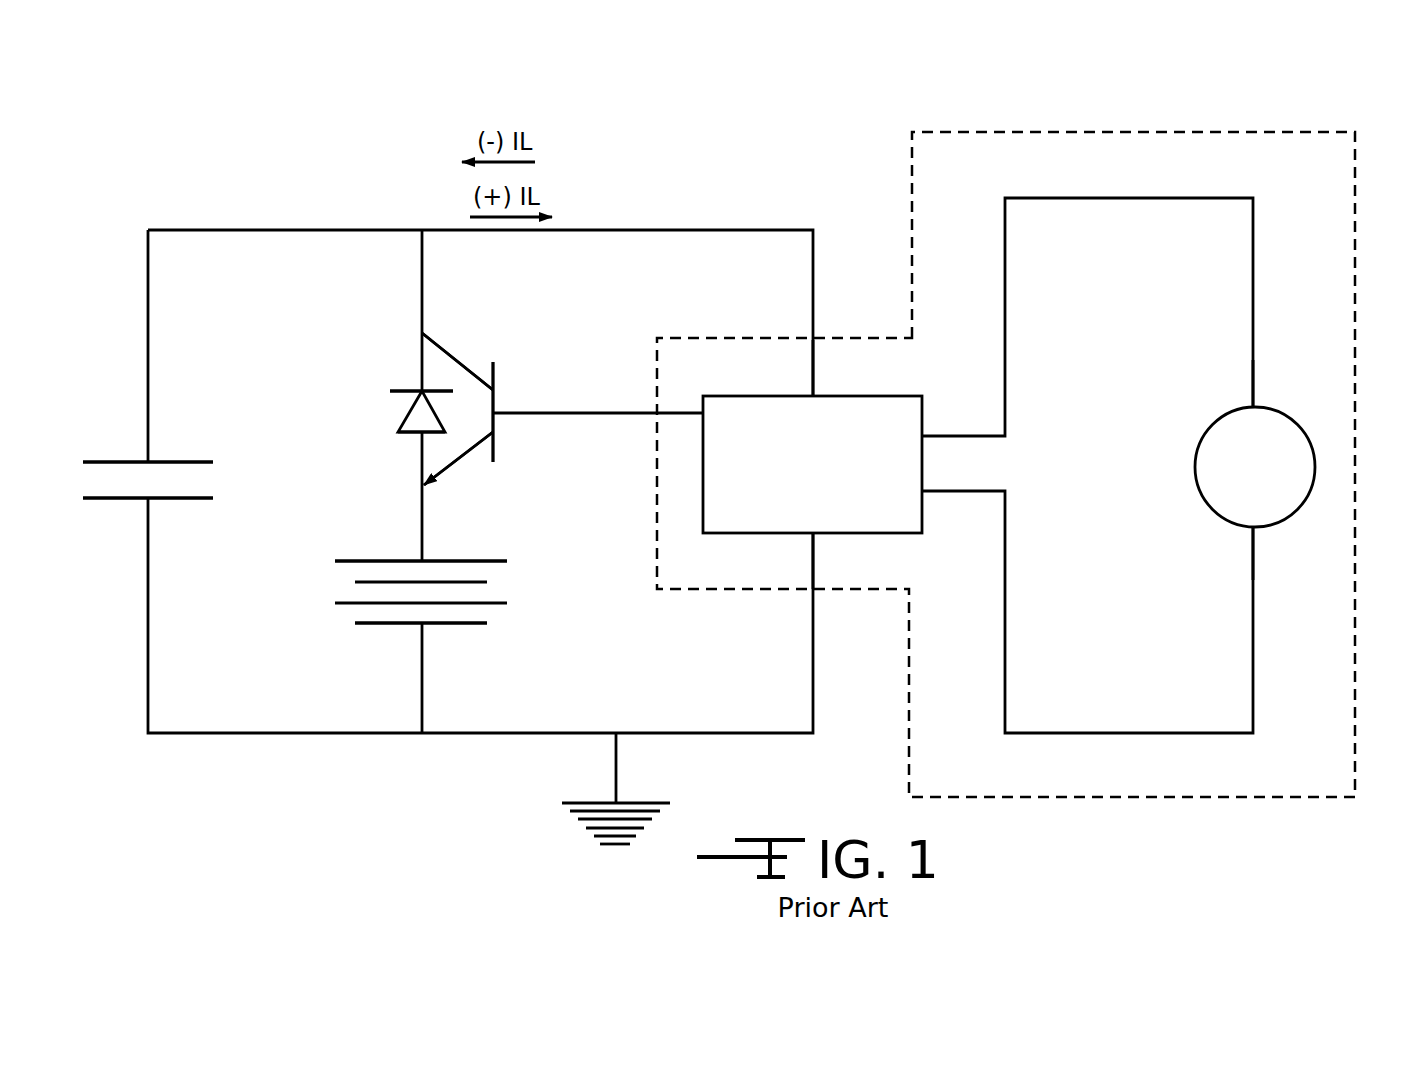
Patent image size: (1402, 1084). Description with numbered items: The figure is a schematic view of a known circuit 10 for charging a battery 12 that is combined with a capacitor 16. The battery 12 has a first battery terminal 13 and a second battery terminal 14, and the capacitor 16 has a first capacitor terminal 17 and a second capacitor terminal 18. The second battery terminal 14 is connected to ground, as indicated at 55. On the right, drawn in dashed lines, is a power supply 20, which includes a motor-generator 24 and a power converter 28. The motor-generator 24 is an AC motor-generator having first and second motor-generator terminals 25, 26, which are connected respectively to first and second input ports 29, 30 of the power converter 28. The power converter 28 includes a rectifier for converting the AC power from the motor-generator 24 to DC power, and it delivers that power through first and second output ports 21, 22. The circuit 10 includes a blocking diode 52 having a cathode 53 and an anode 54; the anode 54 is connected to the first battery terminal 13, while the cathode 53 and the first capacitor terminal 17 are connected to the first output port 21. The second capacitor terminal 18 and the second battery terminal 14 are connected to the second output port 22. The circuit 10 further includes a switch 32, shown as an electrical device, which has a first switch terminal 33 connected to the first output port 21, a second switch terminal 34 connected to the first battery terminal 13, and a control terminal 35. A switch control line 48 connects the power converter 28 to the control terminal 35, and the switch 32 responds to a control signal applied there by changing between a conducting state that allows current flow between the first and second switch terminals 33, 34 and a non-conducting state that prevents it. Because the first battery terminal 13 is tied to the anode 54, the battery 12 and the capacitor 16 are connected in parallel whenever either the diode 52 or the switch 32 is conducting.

The circuit 10 is at (674, 172).
The battery 12 is at (353, 557).
The first battery terminal 13 is at (424, 558).
The second battery terminal 14 is at (424, 628).
The capacitor 16 is at (144, 458).
The first capacitor terminal 17 is at (150, 460).
The second capacitor terminal 18 is at (150, 500).
The power supply 20 is at (905, 238).
The first output port 21 is at (815, 380).
The second output port 22 is at (815, 537).
The motor-generator 24 is at (1192, 463).
The first motor-generator terminal 25 is at (1250, 406).
The second motor-generator terminal 26 is at (1250, 528).
The power converter 28 is at (766, 389).
The first input port 29 is at (924, 434).
The second input port 30 is at (924, 493).
The switch 32 is at (497, 365).
The first switch terminal 33 is at (424, 330).
The second switch terminal 34 is at (420, 490).
The control terminal 35 is at (496, 425).
The switch control line 48 is at (566, 410).
The blocking diode 52 is at (396, 417).
The cathode 53 is at (420, 388).
The anode 54 is at (420, 435).
The ground 55 is at (617, 800).